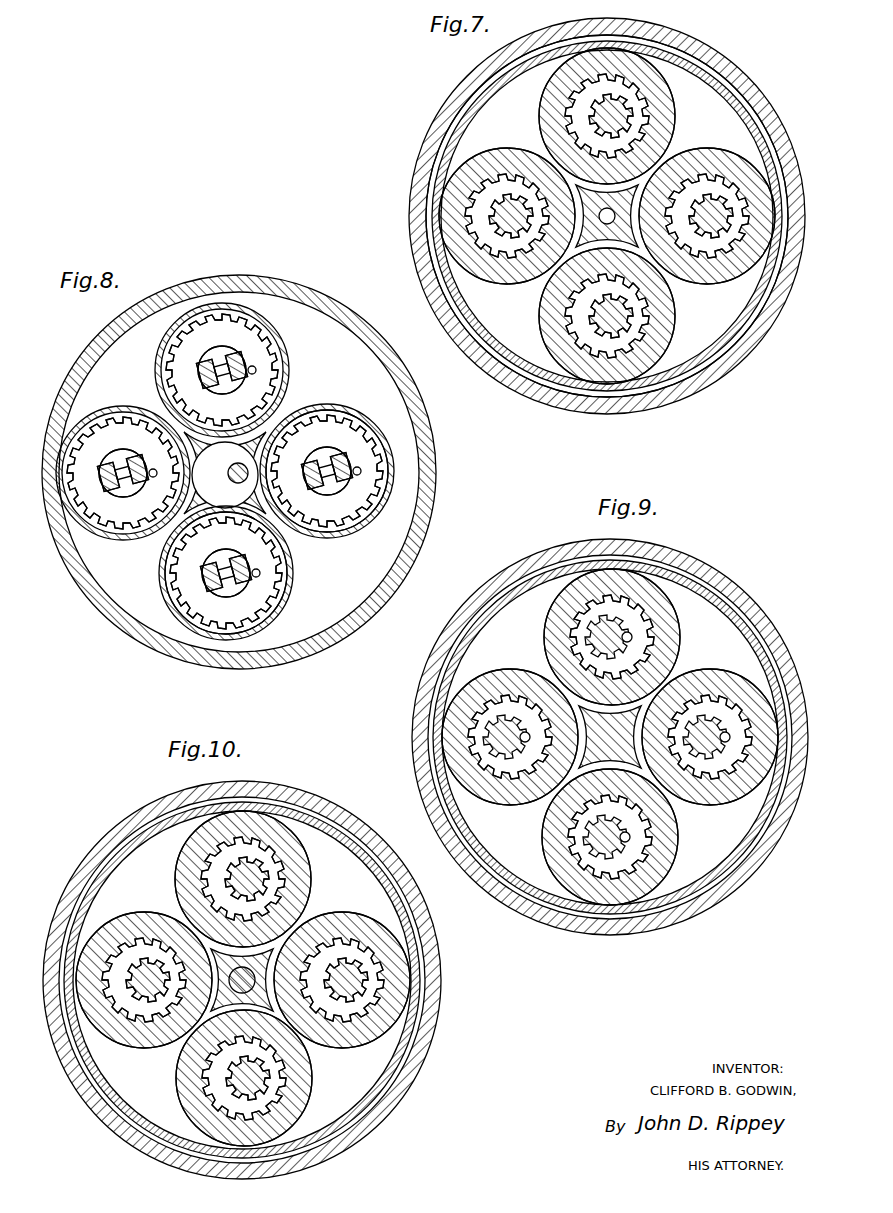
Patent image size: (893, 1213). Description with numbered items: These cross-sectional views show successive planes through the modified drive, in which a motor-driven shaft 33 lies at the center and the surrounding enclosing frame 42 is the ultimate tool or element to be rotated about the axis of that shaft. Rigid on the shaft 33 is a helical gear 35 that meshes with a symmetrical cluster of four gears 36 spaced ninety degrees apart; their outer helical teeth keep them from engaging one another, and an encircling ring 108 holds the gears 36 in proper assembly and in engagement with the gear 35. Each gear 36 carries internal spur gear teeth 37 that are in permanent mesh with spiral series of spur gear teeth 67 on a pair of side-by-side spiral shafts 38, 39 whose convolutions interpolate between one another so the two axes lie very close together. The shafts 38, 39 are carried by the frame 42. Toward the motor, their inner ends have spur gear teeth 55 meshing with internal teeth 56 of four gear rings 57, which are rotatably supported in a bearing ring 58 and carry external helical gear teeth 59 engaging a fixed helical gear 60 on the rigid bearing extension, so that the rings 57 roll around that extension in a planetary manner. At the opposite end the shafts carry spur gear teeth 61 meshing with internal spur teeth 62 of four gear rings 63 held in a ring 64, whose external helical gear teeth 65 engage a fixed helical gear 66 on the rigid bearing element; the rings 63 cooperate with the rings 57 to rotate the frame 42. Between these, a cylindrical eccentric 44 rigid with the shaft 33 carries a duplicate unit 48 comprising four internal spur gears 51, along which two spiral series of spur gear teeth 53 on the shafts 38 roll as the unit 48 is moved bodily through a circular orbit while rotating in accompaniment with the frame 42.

In FIG. 8, the shaft 33 is at (232, 479).
In FIG. 10, the shaft 33 is at (256, 980).
In FIG. 9, the helical gear 35 is at (600, 737).
In FIG. 9, the gears 36 is at (664, 615).
In FIG. 9, the spur gear teeth 37 is at (626, 592).
In FIG. 7, the spiral shaft 38 is at (622, 117).
In FIG. 8, the spiral shaft 38 is at (248, 370).
In FIG. 9, the spiral shaft 38 is at (632, 637).
In FIG. 10, the spiral shaft 38 is at (266, 880).
In FIG. 7, the spiral shaft 39 is at (600, 117).
In FIG. 8, the spiral shaft 39 is at (200, 372).
In FIG. 9, the spiral shaft 39 is at (590, 637).
In FIG. 10, the spiral shaft 39 is at (226, 880).
In FIG. 7, the enclosing frame 42 is at (738, 62).
In FIG. 8, the enclosing frame 42 is at (232, 274).
In FIG. 9, the enclosing frame 42 is at (726, 572).
In FIG. 10, the enclosing frame 42 is at (278, 784).
In FIG. 8, the cylindrical eccentric 44 is at (246, 460).
In FIG. 8, the unit 48 is at (316, 412).
In FIG. 8, the internal spur gear 51 is at (276, 330).
In FIG. 8, the spur gear teeth 53 is at (250, 350).
In FIG. 10, the spur gear teeth 55 is at (240, 856).
In FIG. 10, the internal teeth 56 is at (292, 862).
In FIG. 10, the gear ring 57 is at (302, 912).
In FIG. 10, the bearing ring 58 is at (318, 812).
In FIG. 10, the external helical gear teeth 59 is at (178, 870).
In FIG. 10, the fixed helical gear 60 is at (276, 996).
In FIG. 7, the spur gear teeth 61 is at (570, 136).
In FIG. 7, the internal spur teeth 62 is at (572, 96).
In FIG. 7, the gear ring 63 is at (562, 108).
In FIG. 7, the ring 64 is at (750, 108).
In FIG. 7, the external helical gear teeth 65 is at (668, 74).
In FIG. 7, the fixed helical gear 66 is at (586, 250).
In FIG. 9, the spur gear teeth 67 is at (650, 660).
In FIG. 9, the ring 108 is at (742, 624).